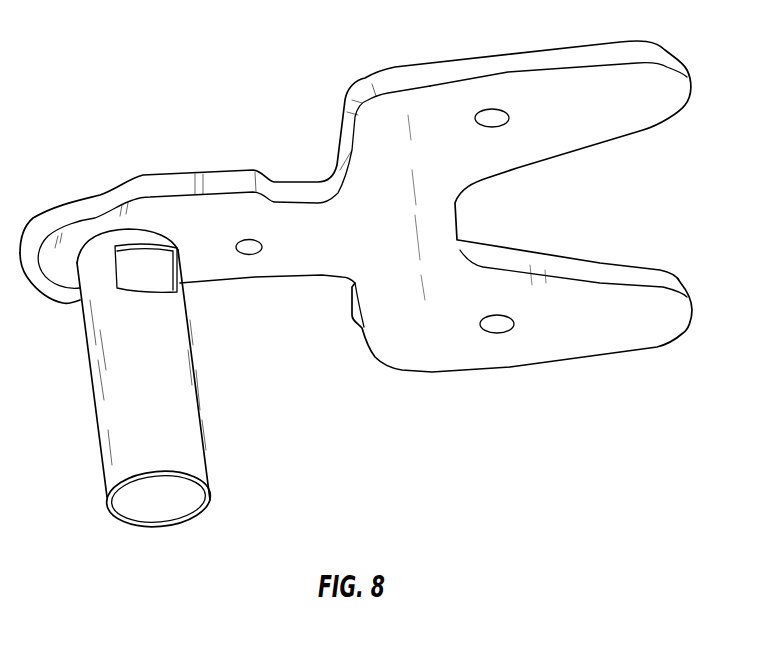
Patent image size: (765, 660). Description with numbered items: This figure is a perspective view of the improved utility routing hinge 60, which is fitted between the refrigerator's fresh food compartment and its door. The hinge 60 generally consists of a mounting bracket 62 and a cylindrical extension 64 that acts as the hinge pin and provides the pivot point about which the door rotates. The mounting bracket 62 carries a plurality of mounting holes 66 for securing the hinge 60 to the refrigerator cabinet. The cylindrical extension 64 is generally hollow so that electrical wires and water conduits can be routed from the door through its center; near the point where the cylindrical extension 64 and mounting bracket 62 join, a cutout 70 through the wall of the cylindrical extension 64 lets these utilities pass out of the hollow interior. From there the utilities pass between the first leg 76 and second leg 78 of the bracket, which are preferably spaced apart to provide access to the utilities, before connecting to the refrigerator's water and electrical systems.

The utility routing hinge 60 is at (366, 201).
The mounting bracket 62 is at (417, 75).
The cylindrical extension 64 is at (129, 375).
The mounting holes 66 is at (492, 127).
The cutout 70 is at (160, 262).
The first leg 76 is at (633, 350).
The second leg 78 is at (663, 117).